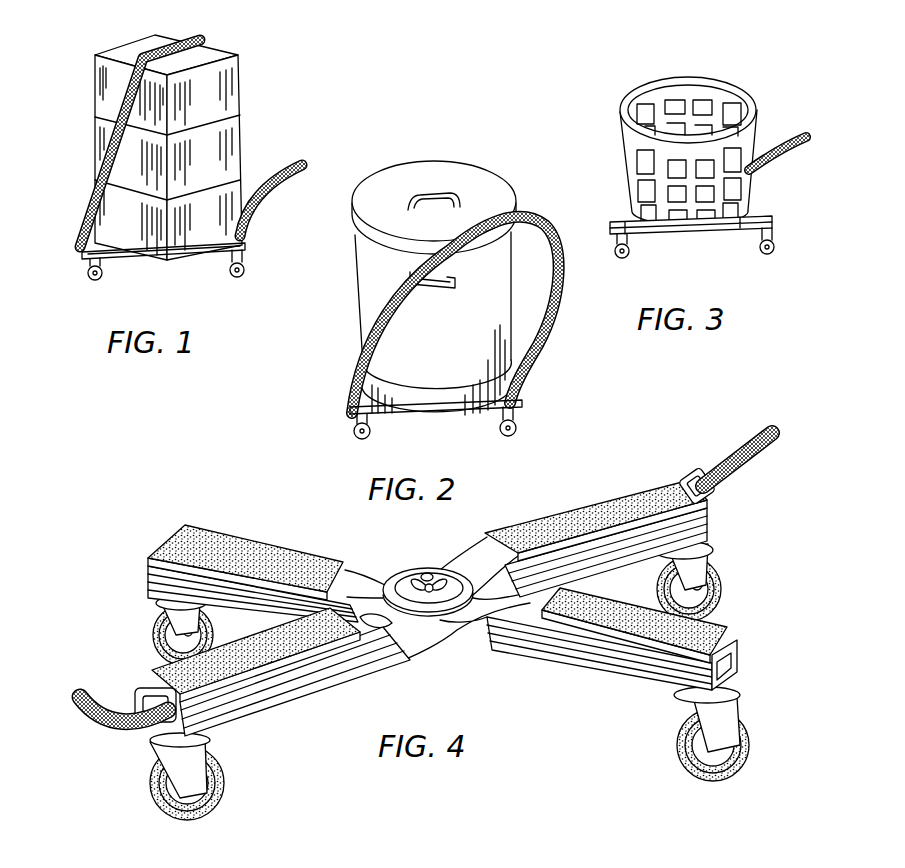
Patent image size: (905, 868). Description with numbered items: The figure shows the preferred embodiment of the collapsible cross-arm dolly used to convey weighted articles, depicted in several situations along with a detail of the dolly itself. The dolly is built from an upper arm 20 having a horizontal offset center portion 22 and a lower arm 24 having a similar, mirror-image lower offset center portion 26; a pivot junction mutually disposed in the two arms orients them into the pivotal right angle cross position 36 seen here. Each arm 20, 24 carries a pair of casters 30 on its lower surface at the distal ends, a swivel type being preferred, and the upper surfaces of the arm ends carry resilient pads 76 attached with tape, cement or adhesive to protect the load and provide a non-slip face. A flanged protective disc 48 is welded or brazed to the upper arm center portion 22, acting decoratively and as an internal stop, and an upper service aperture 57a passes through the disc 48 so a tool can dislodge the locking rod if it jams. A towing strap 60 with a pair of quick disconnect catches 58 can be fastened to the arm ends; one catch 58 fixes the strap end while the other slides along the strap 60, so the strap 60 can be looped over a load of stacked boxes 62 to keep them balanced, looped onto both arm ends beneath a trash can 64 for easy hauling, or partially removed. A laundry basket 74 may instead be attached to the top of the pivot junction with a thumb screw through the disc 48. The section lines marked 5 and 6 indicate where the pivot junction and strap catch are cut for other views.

In FIG. 4, the upper arm 20 is at (280, 702).
In FIG. 4, the upper arm horizontal offset center portion 22 is at (453, 552).
In FIG. 4, the lower arm 24 is at (148, 556).
In FIG. 4, the lower arm horizontal offset center portion 26 is at (455, 640).
In FIG. 1, the caster 30 is at (236, 288).
In FIG. 2, the caster 30 is at (519, 428).
In FIG. 3, the caster 30 is at (773, 256).
In FIG. 4, the caster 30 is at (210, 805).
In FIG. 4, the pivotal right angle cross position 36 is at (318, 546).
In FIG. 4, the flanged protective disc 48 is at (400, 585).
In FIG. 4, the upper service aperture 57a is at (427, 572).
In FIG. 1, the quick disconnect catch 58 is at (86, 256).
In FIG. 2, the quick disconnect catch 58 is at (348, 413).
In FIG. 4, the quick disconnect catch 58 is at (143, 690).
In FIG. 1, the towing strap 60 is at (107, 152).
In FIG. 2, the towing strap 60 is at (540, 218).
In FIG. 3, the towing strap 60 is at (794, 140).
In FIG. 4, the towing strap 60 is at (115, 735).
In FIG. 1, the boxes 62 is at (118, 52).
In FIG. 2, the trash can 64 is at (423, 163).
In FIG. 3, the laundry basket 74 is at (700, 73).
In FIG. 4, the resilient pad 76 is at (220, 532).
In FIG. 4, the section line for FIG. 5 is at (102, 743).
In FIG. 4, the section line for FIGS. 6,7 6 is at (110, 688).